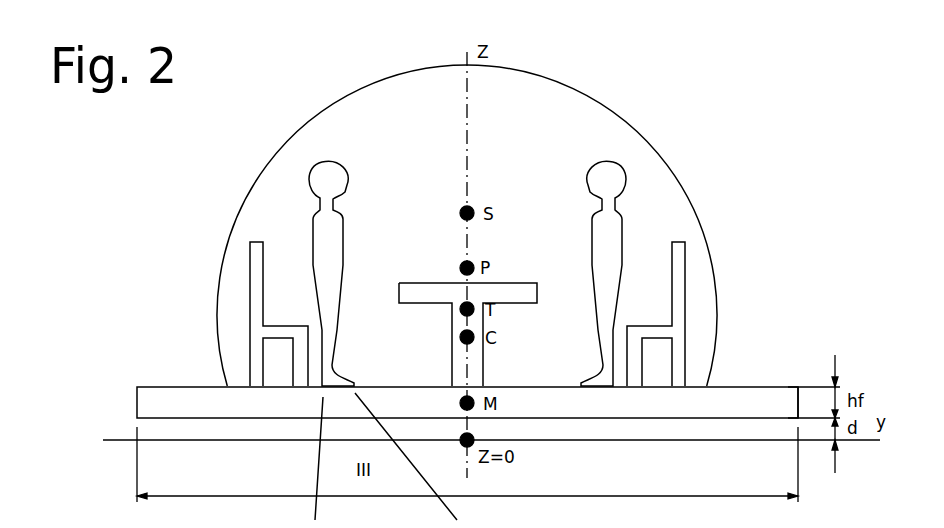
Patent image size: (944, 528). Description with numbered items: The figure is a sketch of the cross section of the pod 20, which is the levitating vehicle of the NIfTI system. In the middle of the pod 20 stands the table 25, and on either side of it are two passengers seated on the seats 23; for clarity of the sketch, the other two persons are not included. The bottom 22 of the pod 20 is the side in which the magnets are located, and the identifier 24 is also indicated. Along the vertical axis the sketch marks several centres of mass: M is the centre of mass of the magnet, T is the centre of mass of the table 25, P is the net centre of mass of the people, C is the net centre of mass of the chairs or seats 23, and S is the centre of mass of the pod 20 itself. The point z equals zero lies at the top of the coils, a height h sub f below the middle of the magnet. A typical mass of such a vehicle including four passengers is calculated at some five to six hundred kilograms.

The pod 20 is at (588, 131).
The bottom side 22 is at (163, 403).
The seats 23 is at (258, 261).
The identifier 24 is at (770, 404).
The table 25 is at (540, 295).